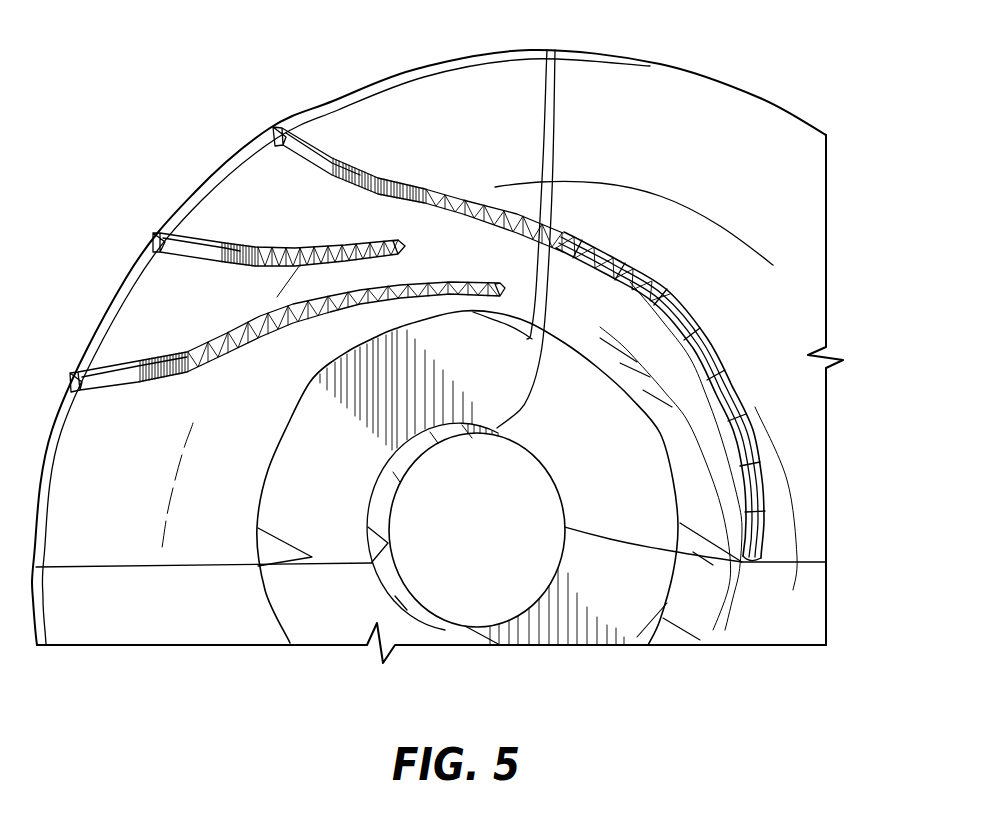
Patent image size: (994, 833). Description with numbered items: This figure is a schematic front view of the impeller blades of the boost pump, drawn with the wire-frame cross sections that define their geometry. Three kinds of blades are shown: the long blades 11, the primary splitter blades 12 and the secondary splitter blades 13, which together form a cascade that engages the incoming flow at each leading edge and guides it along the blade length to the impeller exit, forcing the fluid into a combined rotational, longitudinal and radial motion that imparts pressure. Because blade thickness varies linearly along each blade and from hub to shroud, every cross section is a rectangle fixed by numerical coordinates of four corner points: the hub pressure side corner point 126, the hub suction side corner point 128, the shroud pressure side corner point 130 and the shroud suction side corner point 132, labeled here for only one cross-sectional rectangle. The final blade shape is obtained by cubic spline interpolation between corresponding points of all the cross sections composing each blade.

The long blades 11 is at (607, 272).
The primary splitter blades 12 is at (208, 360).
The secondary splitter blades 13 is at (197, 236).
The hub pressure side corner point 126 is at (383, 220).
The hub suction side corner point 128 is at (522, 230).
The shroud pressure side corner point 130 is at (536, 260).
The shroud suction side corner point 132 is at (407, 211).